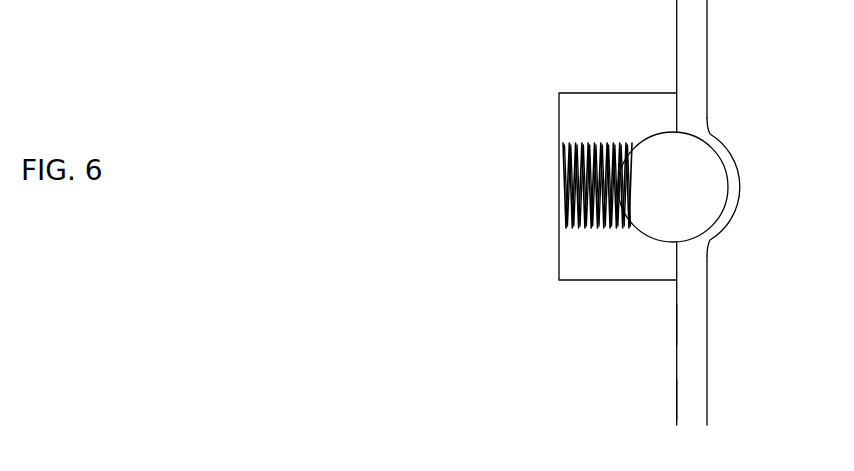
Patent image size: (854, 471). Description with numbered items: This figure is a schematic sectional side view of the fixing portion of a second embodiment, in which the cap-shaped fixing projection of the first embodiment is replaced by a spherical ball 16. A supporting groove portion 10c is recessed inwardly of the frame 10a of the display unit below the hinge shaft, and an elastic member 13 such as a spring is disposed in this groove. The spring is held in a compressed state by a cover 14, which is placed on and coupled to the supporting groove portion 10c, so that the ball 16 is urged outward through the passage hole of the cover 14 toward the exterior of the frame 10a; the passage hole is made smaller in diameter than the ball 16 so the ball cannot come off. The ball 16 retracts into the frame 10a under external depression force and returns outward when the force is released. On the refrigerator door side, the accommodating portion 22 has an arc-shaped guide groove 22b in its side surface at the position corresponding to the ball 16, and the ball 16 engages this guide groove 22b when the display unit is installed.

The frame 10a is at (676, 388).
The supporting groove portion 10c is at (559, 118).
The elastic member 13 is at (585, 182).
The cover 14 is at (676, 312).
The spherical ball 16 is at (725, 192).
The accommodating portion 22 is at (689, 76).
The arc-shaped guide groove 22b is at (707, 248).